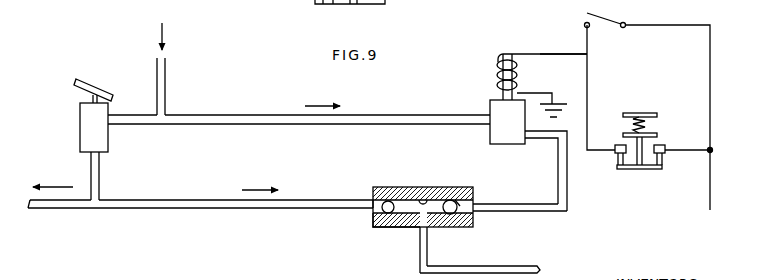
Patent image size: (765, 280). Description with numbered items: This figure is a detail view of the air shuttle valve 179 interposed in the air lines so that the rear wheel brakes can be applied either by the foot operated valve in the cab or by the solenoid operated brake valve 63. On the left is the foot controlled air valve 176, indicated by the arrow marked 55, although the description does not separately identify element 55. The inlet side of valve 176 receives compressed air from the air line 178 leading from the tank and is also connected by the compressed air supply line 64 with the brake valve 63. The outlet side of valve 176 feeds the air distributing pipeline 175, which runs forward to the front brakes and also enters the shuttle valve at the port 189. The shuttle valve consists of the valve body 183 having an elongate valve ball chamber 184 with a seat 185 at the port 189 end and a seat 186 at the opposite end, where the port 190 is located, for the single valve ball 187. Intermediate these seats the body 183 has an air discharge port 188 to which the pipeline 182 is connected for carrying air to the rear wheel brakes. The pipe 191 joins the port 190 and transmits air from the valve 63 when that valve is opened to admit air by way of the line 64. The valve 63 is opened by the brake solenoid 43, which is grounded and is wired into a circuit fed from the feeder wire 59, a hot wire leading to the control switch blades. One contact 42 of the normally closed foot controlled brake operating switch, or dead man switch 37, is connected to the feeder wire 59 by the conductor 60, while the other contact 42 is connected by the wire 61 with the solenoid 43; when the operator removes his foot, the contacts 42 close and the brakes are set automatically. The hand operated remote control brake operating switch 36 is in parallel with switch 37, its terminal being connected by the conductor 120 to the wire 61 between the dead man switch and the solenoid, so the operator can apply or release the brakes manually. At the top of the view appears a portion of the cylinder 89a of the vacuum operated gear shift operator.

The valve 55 is at (70, 115).
The foot controlled air valve 176 is at (85, 129).
The air line 178 is at (157, 77).
The compressed air supply line 64 is at (242, 115).
The air distributing pipeline 175 is at (187, 208).
The cylinder 89a is at (395, 0).
The wire 61 is at (530, 50).
The brake solenoid 43 is at (495, 70).
The brake valve 63 is at (503, 115).
The conductor 120 is at (587, 43).
The remote control brake operating switch 36 is at (611, 14).
The contacts 42 is at (616, 148).
The conductor 60 is at (685, 153).
The foot controlled brake operating switch 37 is at (648, 173).
The feeder wire 59 is at (710, 195).
The pipe 191 is at (567, 193).
The port 190 is at (473, 203).
The valve ball 187 is at (456, 201).
The valve ball chamber 184 is at (430, 196).
The air shuttle valve 179 is at (407, 185).
The seat 185 is at (383, 198).
The port 189 is at (372, 210).
The valve body 183 is at (390, 227).
The air discharge port 188 is at (418, 229).
The seat 186 is at (455, 212).
The pipeline 182 is at (525, 265).